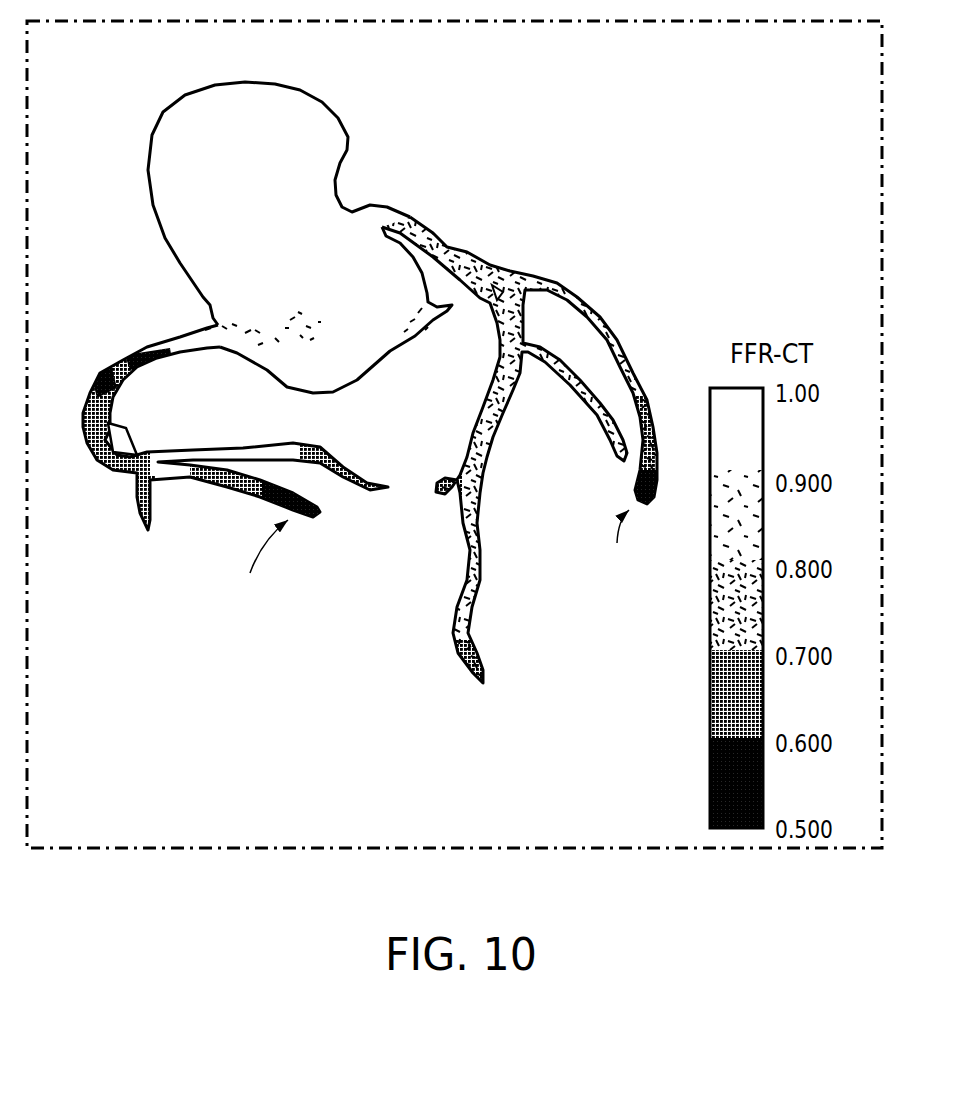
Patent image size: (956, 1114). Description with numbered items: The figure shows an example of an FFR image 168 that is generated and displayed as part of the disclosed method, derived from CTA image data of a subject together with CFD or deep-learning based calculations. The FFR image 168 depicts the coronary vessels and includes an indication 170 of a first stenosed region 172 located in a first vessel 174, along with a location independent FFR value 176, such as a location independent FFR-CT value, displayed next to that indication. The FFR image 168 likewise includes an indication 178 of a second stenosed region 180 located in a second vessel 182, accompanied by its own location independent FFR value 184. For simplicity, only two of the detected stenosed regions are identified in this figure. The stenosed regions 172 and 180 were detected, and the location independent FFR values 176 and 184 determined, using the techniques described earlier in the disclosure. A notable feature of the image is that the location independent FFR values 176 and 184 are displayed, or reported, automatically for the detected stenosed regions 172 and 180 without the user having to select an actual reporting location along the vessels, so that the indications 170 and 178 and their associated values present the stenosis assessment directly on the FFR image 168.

The FFR image 168 is at (108, 132).
The indication of first stenosed region 170 is at (178, 609).
The first stenosed region 172 is at (318, 513).
The first vessel 174 is at (241, 483).
The location independent FFR value 176 is at (142, 657).
The indication of second stenosed region 178 is at (565, 571).
The second stenosed region 180 is at (634, 489).
The second vessel 182 is at (597, 315).
The location independent FFR value 184 is at (538, 630).